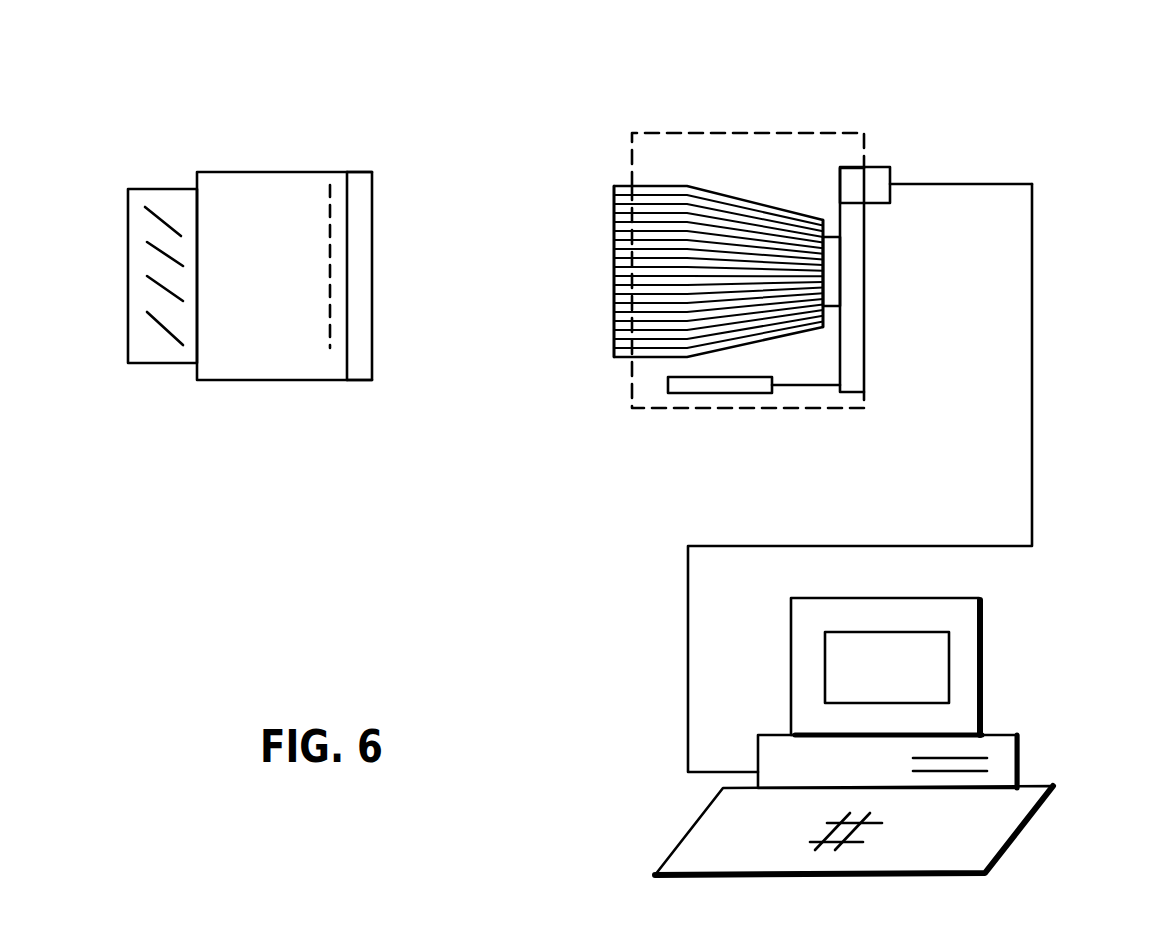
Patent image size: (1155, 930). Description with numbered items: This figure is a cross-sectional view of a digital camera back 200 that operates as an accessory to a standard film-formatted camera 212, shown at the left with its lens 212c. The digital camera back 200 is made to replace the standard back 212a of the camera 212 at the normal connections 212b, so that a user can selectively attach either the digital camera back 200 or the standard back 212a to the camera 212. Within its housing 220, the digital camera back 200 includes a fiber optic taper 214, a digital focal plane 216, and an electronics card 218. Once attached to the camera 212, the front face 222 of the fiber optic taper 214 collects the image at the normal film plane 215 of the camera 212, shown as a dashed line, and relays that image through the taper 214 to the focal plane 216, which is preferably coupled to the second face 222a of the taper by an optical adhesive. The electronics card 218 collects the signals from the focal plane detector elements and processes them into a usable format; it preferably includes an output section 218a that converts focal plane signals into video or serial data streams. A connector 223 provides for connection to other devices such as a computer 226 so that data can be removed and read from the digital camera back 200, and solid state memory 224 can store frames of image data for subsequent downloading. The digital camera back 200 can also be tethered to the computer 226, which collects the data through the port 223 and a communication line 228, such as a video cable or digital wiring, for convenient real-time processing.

The digital camera back 200 is at (1049, 86).
The film-formatted camera 212 is at (265, 198).
The standard back 212a is at (372, 257).
The normal connections 212b is at (348, 170).
The lens 212c is at (164, 364).
The fiber optic taper 214 is at (735, 203).
The normal film plane 215 is at (322, 173).
The digital focal plane 216 is at (833, 282).
The electronics card 218 is at (853, 360).
The output section 218a is at (855, 185).
The housing 220 is at (697, 125).
The front face 222 is at (613, 242).
The second face 222a is at (820, 220).
The connector 223 is at (892, 173).
The solid state memory 224 is at (735, 388).
The computer 226 is at (985, 665).
The communication line 228 is at (1035, 493).